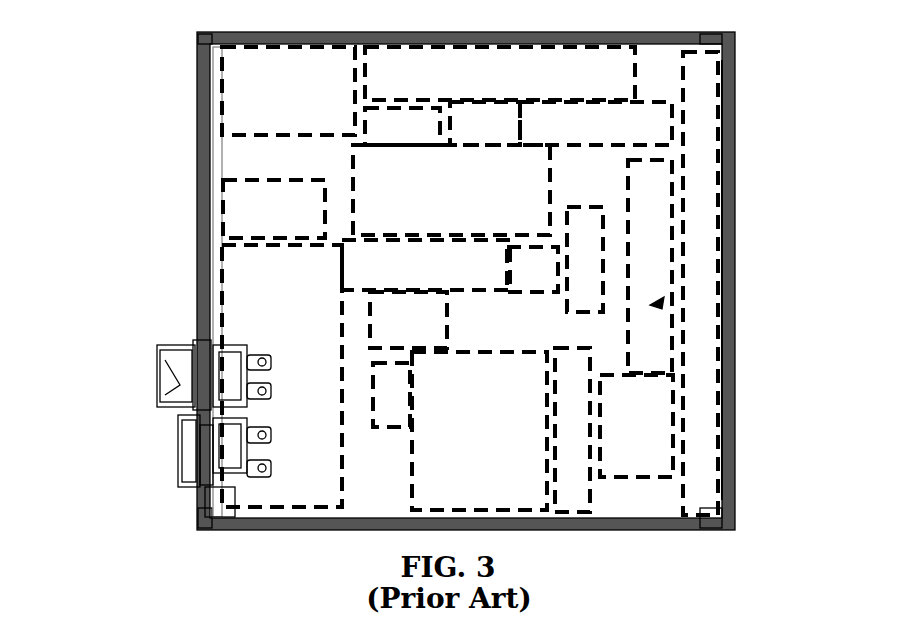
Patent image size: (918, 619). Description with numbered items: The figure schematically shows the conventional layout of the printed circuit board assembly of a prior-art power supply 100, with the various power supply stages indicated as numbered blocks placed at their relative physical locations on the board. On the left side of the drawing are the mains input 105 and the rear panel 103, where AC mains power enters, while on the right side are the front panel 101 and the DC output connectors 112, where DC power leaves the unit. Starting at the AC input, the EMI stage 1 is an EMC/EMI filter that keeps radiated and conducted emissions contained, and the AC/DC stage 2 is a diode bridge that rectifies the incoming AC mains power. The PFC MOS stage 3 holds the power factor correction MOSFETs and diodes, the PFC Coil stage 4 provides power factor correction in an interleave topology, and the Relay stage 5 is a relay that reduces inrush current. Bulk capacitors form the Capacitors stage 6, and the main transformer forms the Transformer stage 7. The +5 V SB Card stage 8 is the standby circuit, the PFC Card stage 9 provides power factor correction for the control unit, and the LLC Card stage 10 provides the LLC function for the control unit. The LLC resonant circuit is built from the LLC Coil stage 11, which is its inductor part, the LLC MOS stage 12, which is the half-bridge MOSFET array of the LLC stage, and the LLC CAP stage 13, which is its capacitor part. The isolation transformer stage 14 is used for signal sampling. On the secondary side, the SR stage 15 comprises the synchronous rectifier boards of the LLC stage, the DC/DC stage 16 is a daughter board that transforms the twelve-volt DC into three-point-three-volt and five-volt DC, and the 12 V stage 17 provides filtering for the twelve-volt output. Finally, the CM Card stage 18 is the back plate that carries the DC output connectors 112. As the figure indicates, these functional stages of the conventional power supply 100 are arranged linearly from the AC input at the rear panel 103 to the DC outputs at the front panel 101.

The power supply 100 is at (104, 100).
The front panel 101 is at (732, 140).
The rear panel 103 is at (197, 250).
The mains input 105 is at (178, 452).
The DC output connectors 112 is at (760, 230).
The EMI stage 1 is at (282, 376).
The AC/DC stage 2 is at (274, 209).
The PFC MOS stage 3 is at (499, 73).
The PFC Coil stage 4 is at (288, 91).
The Relay stage 5 is at (402, 126).
The Capacitors stage 6 is at (451, 190).
The Transformer stage 7 is at (479, 431).
The +5 V SB Card stage 8 is at (596, 123).
The PFC Card stage 9 is at (485, 123).
The LLC Card stage 10 is at (585, 259).
The LLC Coil stage 11 is at (408, 320).
The LLC MOS stage 12 is at (426, 265).
The LLC CAP stage 13 is at (391, 395).
The isolation transformer stage 14 is at (532, 269).
The SR stage 15 is at (572, 430).
The DC/DC stage 16 is at (650, 266).
The 12 V stage 17 is at (636, 426).
The CM Card stage 18 is at (700, 283).